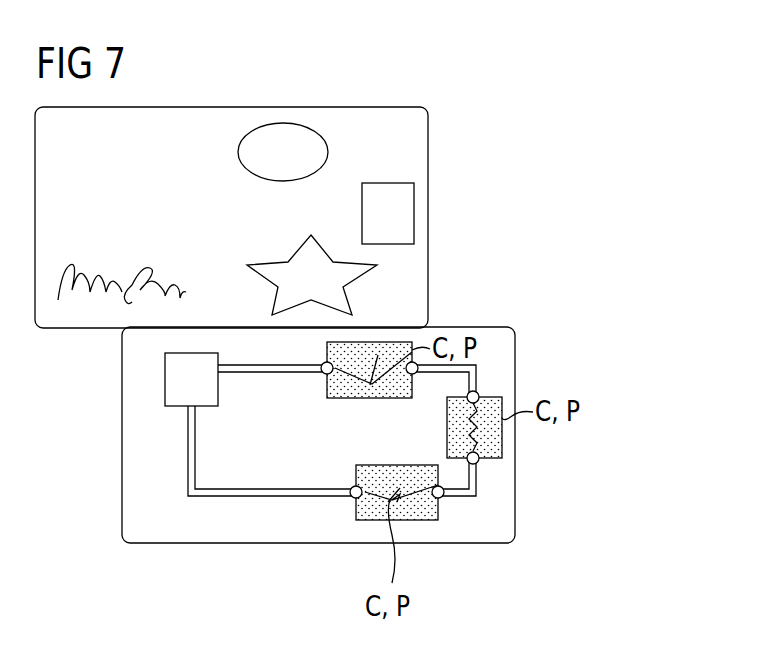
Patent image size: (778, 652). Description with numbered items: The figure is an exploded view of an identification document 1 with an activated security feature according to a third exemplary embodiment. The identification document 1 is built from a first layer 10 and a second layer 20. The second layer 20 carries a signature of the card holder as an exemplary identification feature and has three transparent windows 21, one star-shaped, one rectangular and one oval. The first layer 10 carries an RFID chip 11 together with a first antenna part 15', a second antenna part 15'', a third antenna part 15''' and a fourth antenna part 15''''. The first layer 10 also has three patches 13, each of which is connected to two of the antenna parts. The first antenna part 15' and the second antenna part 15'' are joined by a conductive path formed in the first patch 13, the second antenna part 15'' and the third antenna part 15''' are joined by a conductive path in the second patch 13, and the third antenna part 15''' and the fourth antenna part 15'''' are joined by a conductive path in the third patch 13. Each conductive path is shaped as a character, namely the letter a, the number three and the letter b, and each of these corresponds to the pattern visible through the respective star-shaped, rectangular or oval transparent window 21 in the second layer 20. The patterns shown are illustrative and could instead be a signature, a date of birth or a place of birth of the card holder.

The identification document 1 is at (622, 130).
The first layer 10 is at (518, 340).
The RFID chip 11 is at (192, 376).
The patch 13 is at (327, 352).
The first antenna part 15' is at (272, 499).
The second antenna part 15'' is at (473, 524).
The third antenna part 15''' is at (497, 374).
The fourth antenna part 15'''' is at (268, 415).
The second layer 20 is at (433, 127).
The transparent window 21 is at (237, 150).